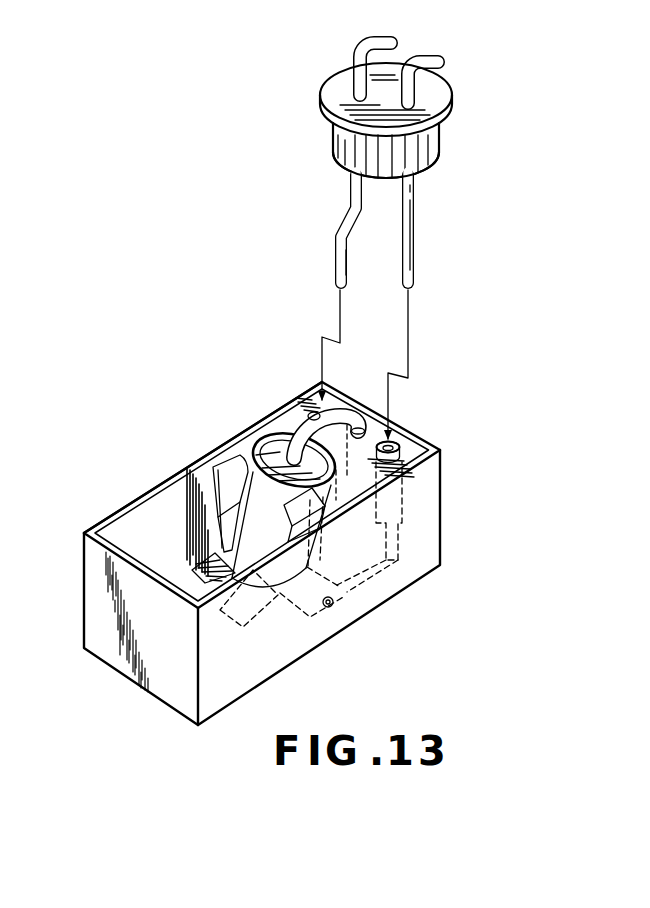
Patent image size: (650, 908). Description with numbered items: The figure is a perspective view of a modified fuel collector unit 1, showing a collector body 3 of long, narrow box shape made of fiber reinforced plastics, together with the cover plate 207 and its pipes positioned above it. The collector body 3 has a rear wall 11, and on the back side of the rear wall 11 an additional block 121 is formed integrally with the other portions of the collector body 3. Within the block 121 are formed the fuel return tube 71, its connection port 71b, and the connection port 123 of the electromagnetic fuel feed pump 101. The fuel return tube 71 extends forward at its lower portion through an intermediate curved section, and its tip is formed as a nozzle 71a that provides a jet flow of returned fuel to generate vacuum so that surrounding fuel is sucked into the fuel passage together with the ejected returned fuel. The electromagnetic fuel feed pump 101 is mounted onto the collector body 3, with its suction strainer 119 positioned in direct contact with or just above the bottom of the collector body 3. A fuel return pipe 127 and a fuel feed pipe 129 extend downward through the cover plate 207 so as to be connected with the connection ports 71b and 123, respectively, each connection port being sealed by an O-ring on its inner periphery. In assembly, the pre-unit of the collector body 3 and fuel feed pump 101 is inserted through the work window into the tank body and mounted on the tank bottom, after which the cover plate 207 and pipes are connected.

The fuel collector unit 1 is at (218, 392).
The collector body 3 is at (132, 494).
The rear wall 11 is at (357, 480).
The fuel return tube 71 is at (398, 560).
The nozzle 71a is at (328, 608).
The connection port 71b is at (400, 444).
The electromagnetic fuel feed pump 101 is at (210, 466).
The suction strainer 119 is at (243, 630).
The block 121 is at (437, 447).
The connection port 123 is at (313, 410).
The fuel return pipe 127 is at (436, 52).
The fuel feed pipe 129 is at (352, 52).
The cover plate 207 is at (438, 108).